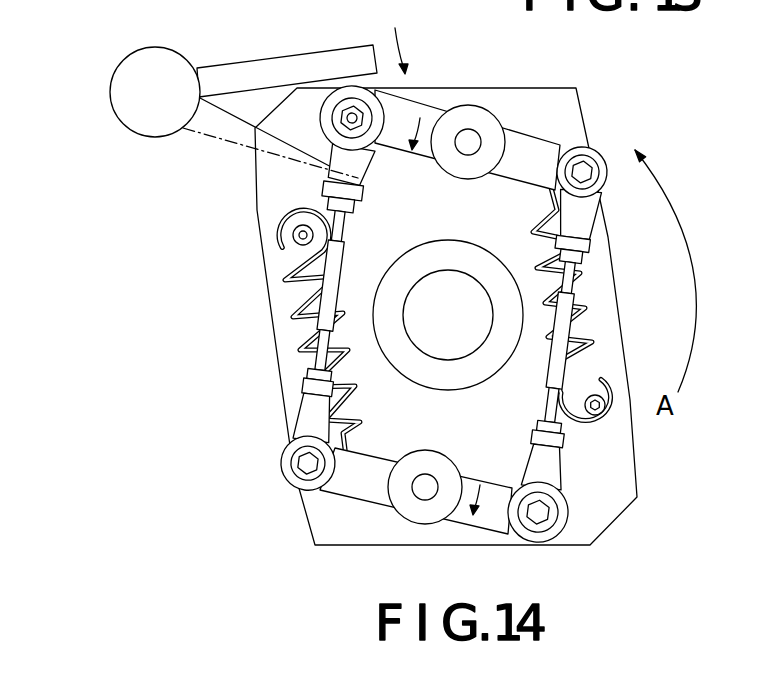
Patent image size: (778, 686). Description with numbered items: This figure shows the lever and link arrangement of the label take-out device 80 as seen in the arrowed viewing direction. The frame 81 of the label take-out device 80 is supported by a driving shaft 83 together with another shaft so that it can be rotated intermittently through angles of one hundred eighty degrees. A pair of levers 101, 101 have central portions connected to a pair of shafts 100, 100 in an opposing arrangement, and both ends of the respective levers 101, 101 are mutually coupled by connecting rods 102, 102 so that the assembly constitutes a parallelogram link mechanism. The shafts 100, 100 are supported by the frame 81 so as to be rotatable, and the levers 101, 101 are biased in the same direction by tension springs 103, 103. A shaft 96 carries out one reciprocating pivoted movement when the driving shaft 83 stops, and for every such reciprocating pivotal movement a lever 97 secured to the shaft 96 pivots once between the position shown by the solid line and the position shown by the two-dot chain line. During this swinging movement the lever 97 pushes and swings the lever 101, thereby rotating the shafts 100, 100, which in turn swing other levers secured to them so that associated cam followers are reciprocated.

The label take-out device 80 is at (417, 310).
The frame 81 is at (263, 193).
The driving shaft 83 is at (380, 336).
The shaft 96 is at (116, 97).
The lever 97 is at (230, 63).
The shaft 100 is at (467, 137).
The lever 101 is at (523, 143).
The connecting rod 102 is at (308, 407).
The tension spring 103 is at (300, 286).